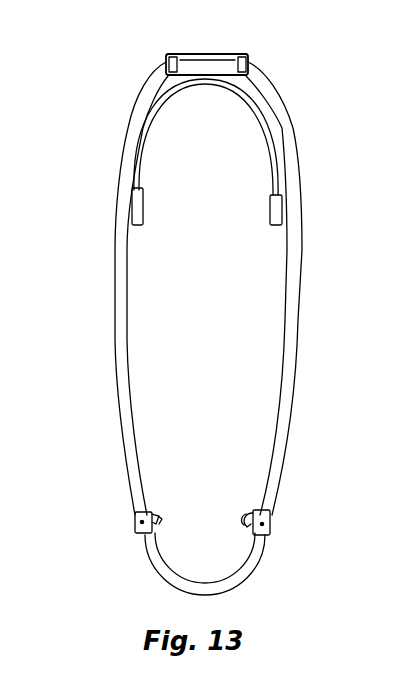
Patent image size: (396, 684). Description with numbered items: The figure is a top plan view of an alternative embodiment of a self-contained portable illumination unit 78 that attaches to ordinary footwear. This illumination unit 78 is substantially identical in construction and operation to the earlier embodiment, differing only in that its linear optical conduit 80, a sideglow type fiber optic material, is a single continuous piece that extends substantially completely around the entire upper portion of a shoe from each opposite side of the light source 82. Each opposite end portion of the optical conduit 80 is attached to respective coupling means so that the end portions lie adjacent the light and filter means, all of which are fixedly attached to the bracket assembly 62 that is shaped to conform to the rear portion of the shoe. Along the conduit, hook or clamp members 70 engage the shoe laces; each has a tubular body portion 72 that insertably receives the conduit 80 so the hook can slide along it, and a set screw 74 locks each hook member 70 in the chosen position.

The bracket assembly 62 is at (175, 106).
The hook or clamp member 70 is at (224, 512).
The tubular body portion 72 is at (135, 520).
The set screw 74 is at (140, 533).
The illumination unit embodiment 78 is at (58, 188).
The linear optical conduit 80 is at (117, 372).
The light source 82 is at (213, 53).